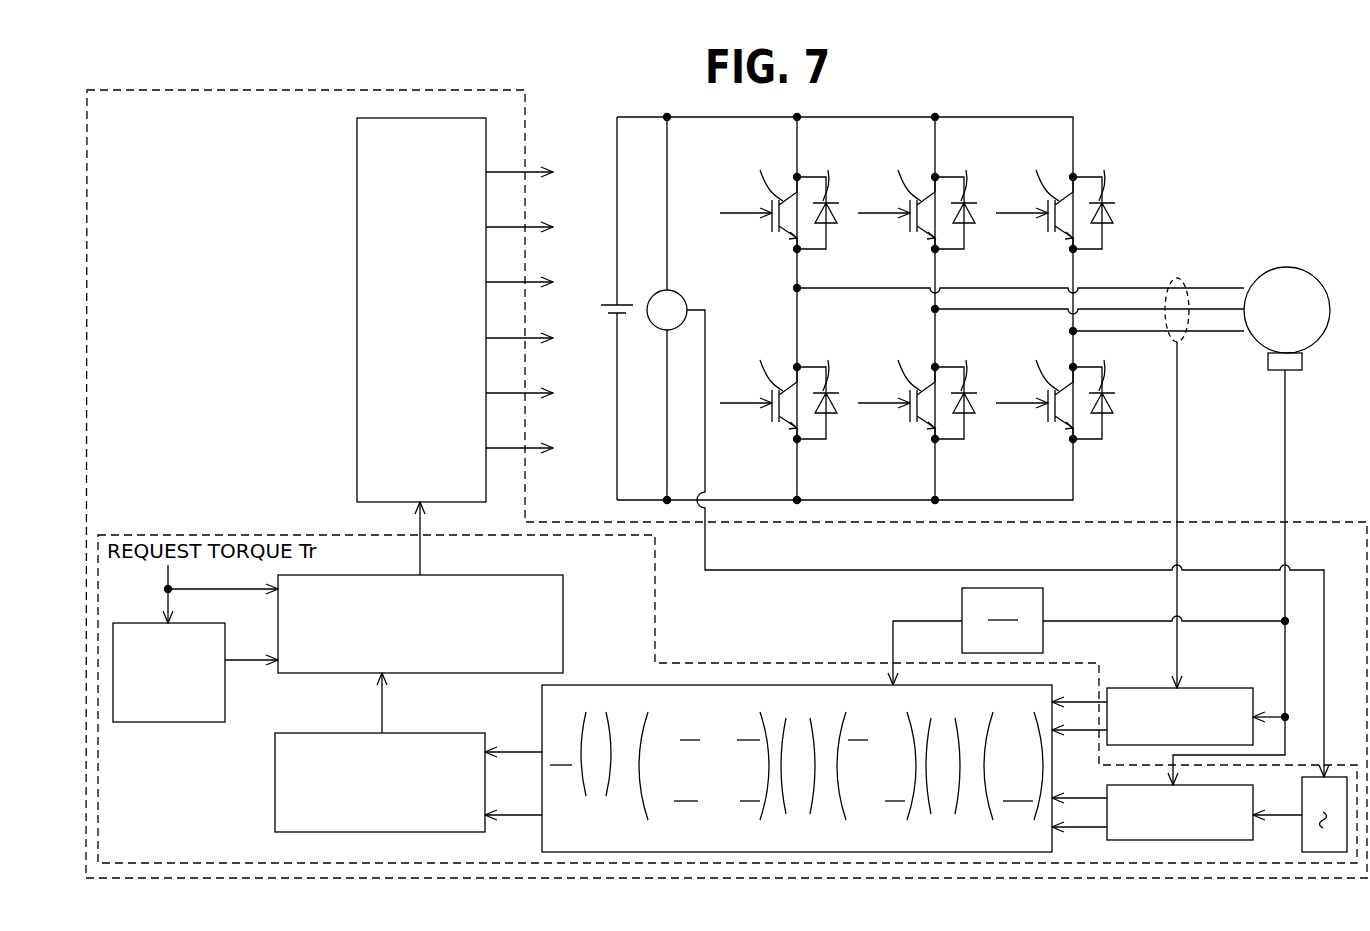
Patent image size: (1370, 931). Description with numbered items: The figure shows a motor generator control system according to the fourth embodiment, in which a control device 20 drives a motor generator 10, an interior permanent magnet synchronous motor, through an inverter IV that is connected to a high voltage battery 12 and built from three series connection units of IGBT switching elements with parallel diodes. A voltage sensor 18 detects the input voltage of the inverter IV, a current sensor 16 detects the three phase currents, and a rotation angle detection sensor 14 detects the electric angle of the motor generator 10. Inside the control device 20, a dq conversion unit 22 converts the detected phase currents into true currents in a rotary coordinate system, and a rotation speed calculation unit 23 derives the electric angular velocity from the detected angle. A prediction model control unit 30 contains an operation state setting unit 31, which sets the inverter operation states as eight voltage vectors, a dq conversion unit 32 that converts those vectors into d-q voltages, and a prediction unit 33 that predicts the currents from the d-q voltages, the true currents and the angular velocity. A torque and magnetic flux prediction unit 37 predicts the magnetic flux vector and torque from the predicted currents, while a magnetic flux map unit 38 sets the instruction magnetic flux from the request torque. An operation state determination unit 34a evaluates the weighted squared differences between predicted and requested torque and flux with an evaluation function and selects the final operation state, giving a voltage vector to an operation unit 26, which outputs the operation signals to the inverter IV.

The motor generator 10 is at (1287, 267).
The high voltage battery 12 is at (624, 303).
The rotation angle detection sensor 14 is at (1268, 360).
The current sensor 16 is at (1177, 278).
The voltage sensor 18 is at (674, 291).
The control device 20 is at (384, 89).
The dq conversion unit 22 is at (1236, 688).
The rotation speed calculation unit 23 is at (1043, 638).
The operation unit 26 is at (357, 334).
The prediction model control unit 30 is at (801, 663).
The operation state setting unit 31 is at (1302, 846).
The dq conversion unit 32 is at (1253, 797).
The prediction unit 33 is at (542, 838).
The operation state determination unit 34a is at (563, 618).
The torque and magnetic flux prediction unit 37 is at (275, 778).
The magnetic flux map unit 38 is at (179, 722).
The inverter IV is at (1100, 127).